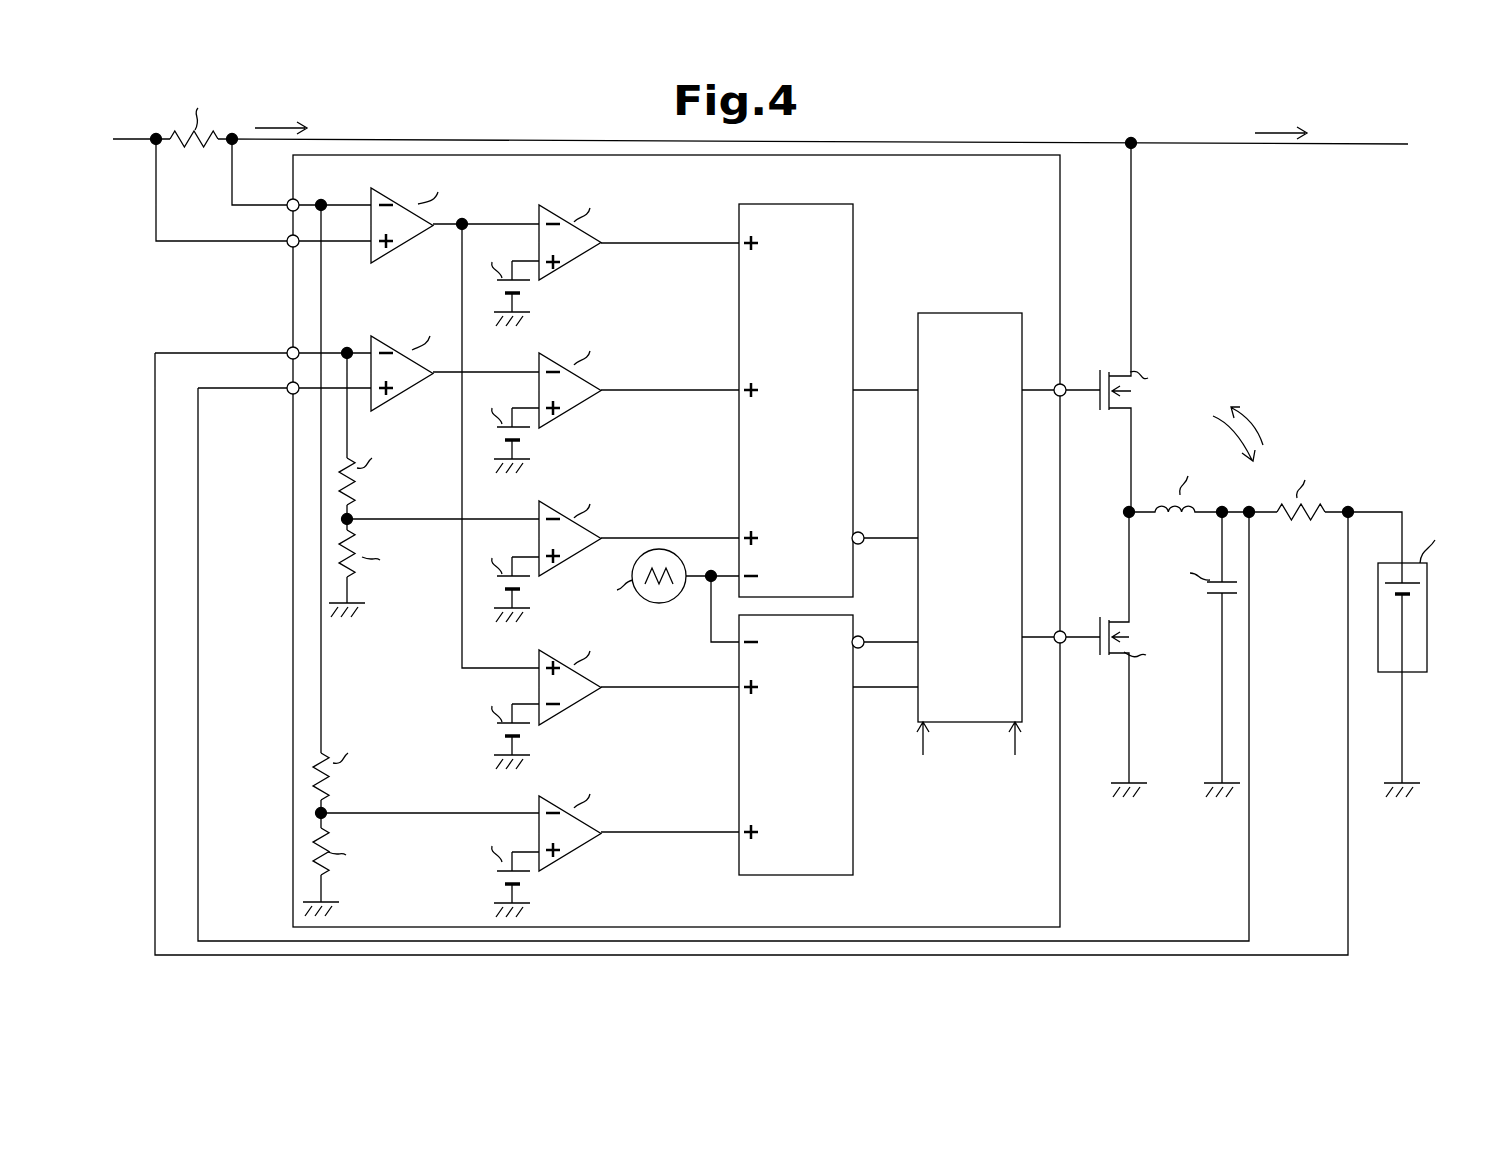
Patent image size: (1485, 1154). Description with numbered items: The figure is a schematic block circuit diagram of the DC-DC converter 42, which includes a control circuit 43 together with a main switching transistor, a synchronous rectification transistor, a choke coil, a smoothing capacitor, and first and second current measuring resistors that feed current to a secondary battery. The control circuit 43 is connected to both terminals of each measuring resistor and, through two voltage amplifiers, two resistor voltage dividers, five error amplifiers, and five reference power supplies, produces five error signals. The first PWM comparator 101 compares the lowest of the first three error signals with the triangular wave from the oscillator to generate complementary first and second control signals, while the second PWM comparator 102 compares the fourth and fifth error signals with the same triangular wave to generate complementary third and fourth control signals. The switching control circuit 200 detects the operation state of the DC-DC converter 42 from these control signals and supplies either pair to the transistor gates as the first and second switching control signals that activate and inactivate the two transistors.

The DC-DC converter 42 is at (1333, 276).
The control circuit 43 is at (1060, 200).
The first PWM comparator 101 is at (853, 215).
The second PWM comparator 102 is at (853, 850).
The switching control circuit 200 is at (985, 313).